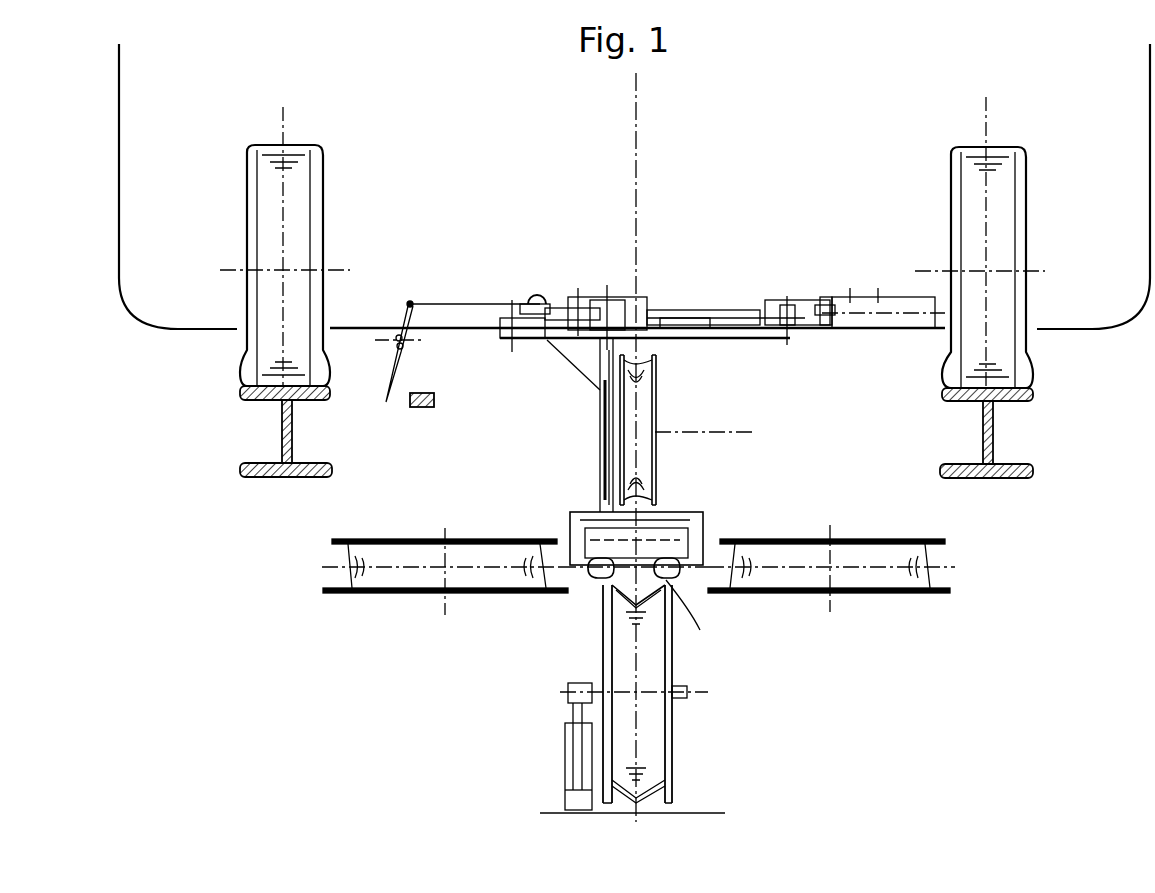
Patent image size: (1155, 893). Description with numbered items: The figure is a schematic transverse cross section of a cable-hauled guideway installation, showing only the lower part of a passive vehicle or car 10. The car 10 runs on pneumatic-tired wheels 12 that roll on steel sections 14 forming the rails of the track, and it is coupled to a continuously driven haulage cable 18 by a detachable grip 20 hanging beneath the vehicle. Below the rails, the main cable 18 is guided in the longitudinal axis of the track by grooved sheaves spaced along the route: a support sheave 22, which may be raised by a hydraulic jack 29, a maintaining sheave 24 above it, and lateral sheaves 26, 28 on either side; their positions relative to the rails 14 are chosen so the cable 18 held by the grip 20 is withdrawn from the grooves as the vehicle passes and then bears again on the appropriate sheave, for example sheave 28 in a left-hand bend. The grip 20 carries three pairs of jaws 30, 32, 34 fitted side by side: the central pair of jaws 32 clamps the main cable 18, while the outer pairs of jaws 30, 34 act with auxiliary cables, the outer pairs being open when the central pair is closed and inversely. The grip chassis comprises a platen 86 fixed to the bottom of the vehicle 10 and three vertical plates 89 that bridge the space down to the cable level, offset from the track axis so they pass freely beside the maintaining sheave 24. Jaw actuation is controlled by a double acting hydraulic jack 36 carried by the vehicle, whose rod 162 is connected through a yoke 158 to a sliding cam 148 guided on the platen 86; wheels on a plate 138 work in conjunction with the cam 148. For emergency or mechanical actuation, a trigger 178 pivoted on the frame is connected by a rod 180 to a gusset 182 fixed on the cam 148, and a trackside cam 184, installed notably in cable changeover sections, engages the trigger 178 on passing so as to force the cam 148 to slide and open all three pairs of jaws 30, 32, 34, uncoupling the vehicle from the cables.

The passive vehicle or car 10 is at (634, 433).
The pneumatic-tired wheels 12 is at (300, 207).
The steel sections 14 is at (282, 440).
The haulage cable 18 is at (700, 630).
The detachable grip 20 is at (704, 506).
The support sheaves 22 is at (650, 760).
The maintaining sheaves 24 is at (650, 395).
The lateral sheave 26 is at (862, 552).
The lateral sheave 28 is at (397, 555).
The hydraulic jack 29 is at (570, 758).
The pair of jaws 30 is at (582, 595).
The central pair of jaws 32 is at (607, 620).
The pair of jaws 34 is at (668, 575).
The hydraulic jack 36 is at (905, 300).
The platen 86 is at (520, 340).
The plates 89 is at (600, 437).
The plate 138 is at (606, 296).
The sliding cam 148 is at (678, 308).
The yoke 158 is at (795, 298).
The rod 162 is at (822, 296).
The trigger 178 is at (412, 372).
The rod 180 is at (432, 300).
The gusset 182 is at (536, 297).
The cam 184 is at (421, 408).